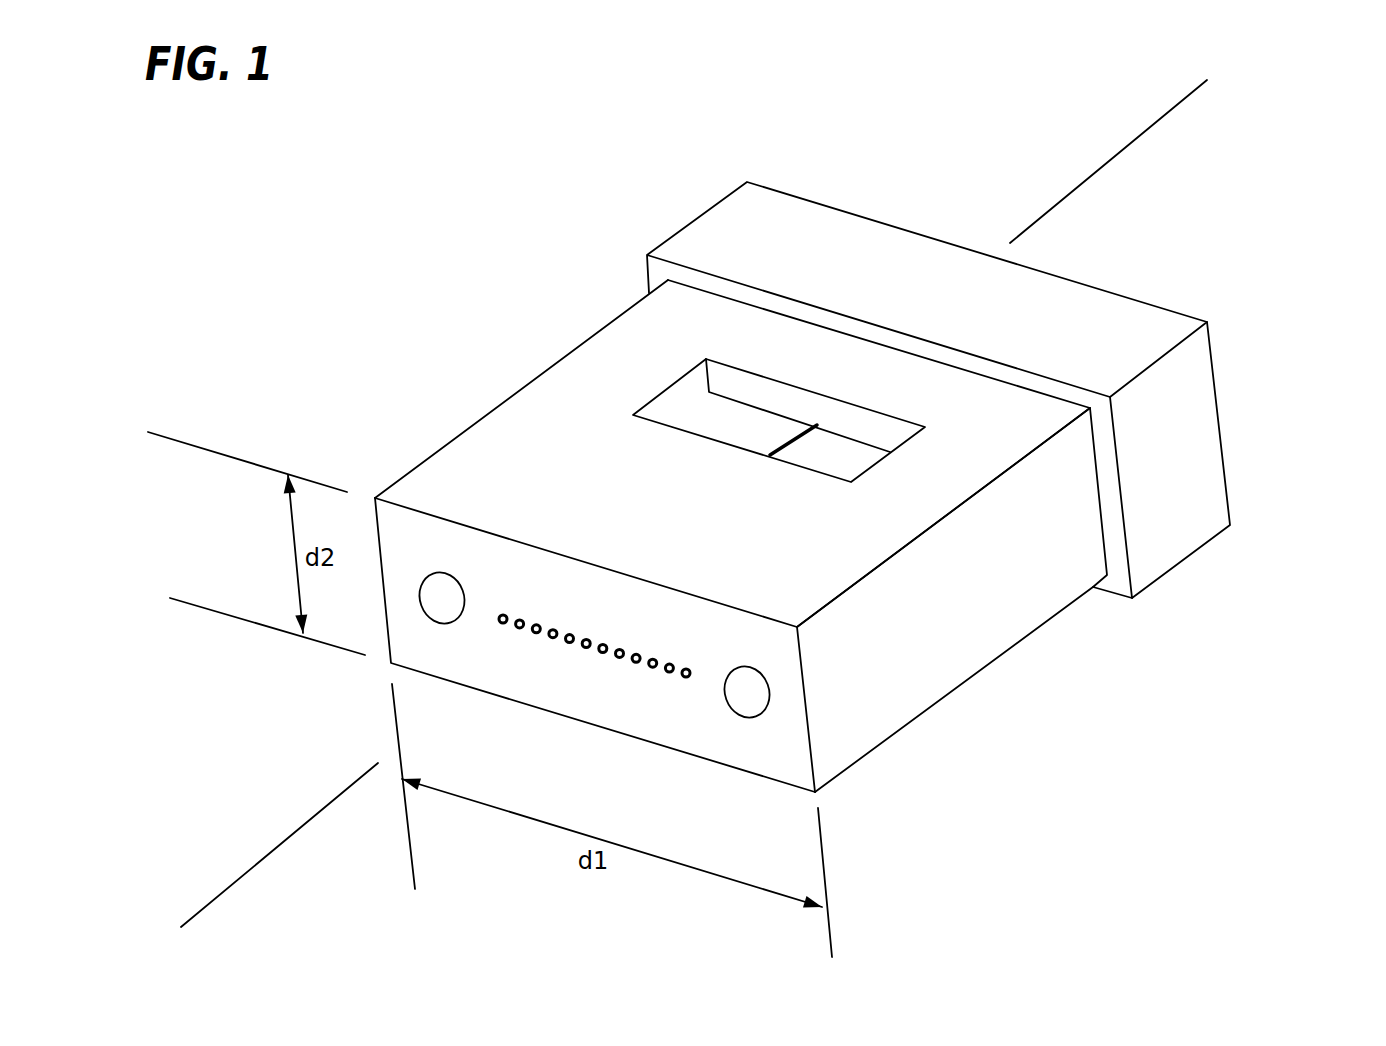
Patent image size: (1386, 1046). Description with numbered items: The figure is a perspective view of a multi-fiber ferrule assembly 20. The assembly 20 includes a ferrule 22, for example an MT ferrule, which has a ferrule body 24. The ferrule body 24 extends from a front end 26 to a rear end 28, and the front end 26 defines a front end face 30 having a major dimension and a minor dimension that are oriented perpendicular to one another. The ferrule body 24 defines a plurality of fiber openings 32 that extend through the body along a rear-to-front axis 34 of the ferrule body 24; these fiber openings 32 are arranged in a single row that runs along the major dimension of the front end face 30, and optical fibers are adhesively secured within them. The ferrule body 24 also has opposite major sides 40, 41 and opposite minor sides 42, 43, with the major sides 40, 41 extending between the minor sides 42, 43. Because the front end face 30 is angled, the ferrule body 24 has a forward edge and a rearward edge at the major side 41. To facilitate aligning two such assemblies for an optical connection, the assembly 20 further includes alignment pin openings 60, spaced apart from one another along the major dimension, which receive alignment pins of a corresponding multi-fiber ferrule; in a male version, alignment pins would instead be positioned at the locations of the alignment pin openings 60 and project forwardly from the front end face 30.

The multi-fiber ferrule assembly 20 is at (872, 118).
The ferrule 22 is at (1016, 660).
The ferrule body 24 is at (928, 678).
The front end 26 is at (815, 792).
The rear end 28 is at (1230, 525).
The front end face 30 is at (576, 700).
The fiber openings 32 is at (502, 614).
The rear-to-front axis 34 is at (1140, 137).
The major side 40 is at (563, 420).
The major side 41 is at (898, 732).
The minor side 42 is at (450, 442).
The minor side 43 is at (1043, 597).
The alignment pin openings 60 is at (434, 578).